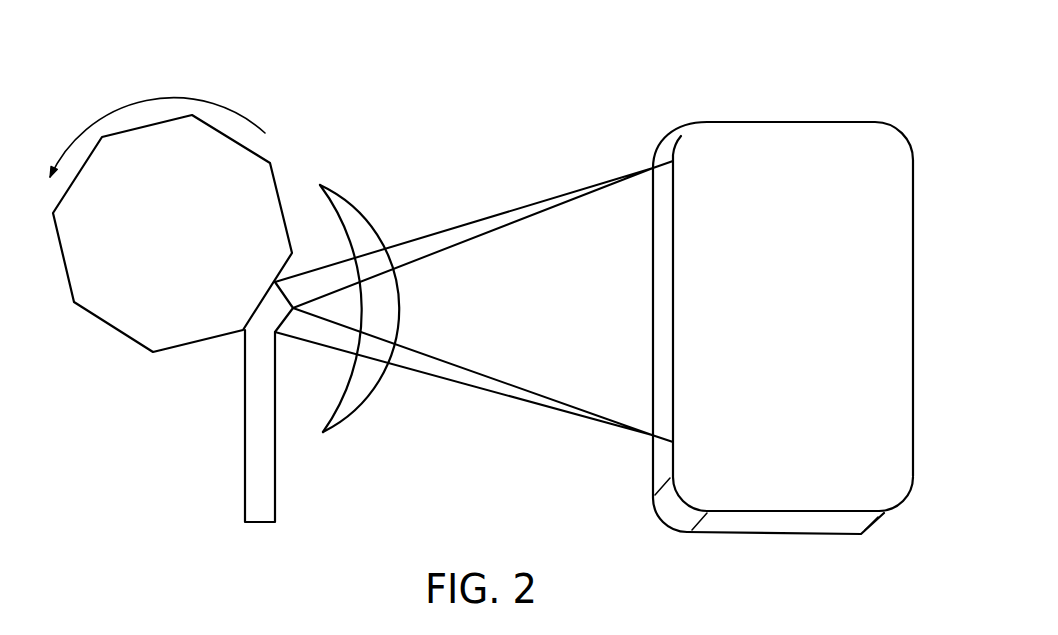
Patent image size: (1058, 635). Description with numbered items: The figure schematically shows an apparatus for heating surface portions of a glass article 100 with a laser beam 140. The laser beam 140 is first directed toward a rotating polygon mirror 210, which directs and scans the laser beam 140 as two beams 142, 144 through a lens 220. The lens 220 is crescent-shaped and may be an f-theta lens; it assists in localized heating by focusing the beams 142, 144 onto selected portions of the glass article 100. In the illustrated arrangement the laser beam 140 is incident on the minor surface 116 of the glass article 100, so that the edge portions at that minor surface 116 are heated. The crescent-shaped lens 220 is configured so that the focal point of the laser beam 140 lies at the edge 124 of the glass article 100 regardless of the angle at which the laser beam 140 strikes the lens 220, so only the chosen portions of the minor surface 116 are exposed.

The glass article 100 is at (755, 273).
The minor surface 116 is at (662, 287).
The edge 124 is at (674, 328).
The laser beam 140 is at (245, 473).
The beam 142 is at (515, 205).
The beam 144 is at (513, 400).
The rotating polygon mirror 210 is at (153, 122).
The lens 220 is at (347, 433).